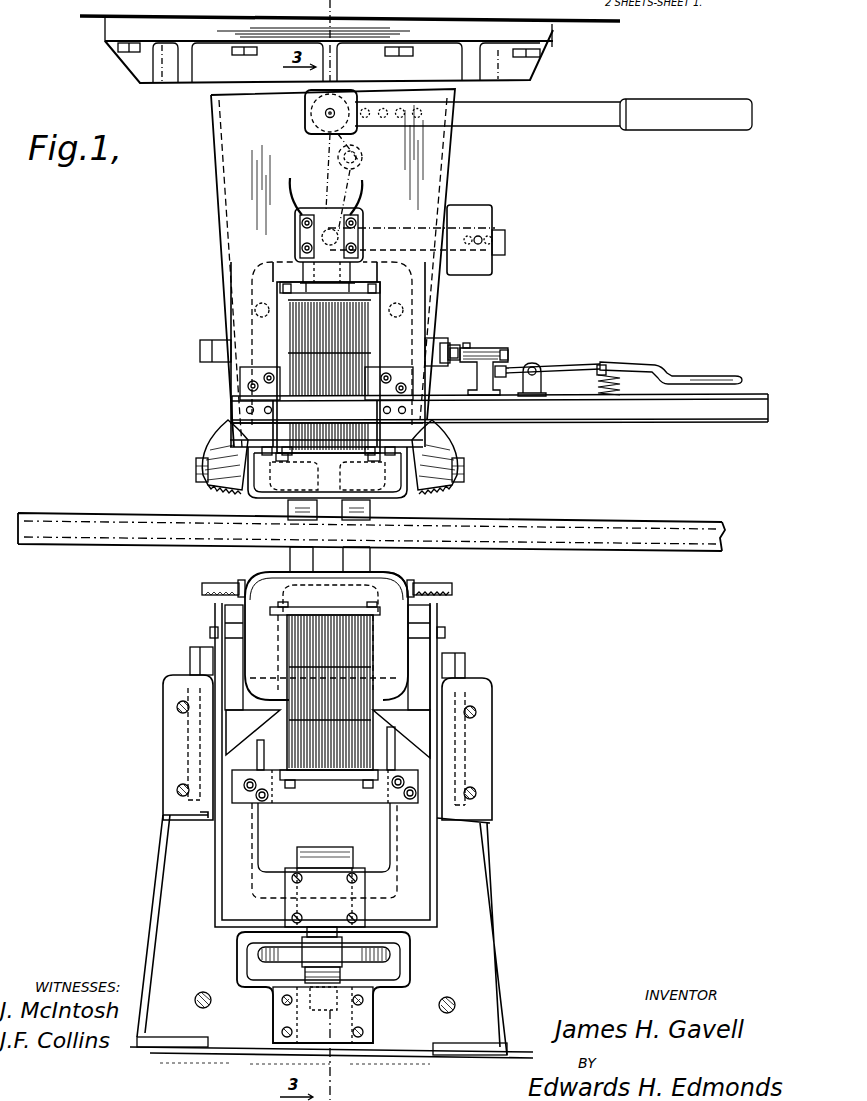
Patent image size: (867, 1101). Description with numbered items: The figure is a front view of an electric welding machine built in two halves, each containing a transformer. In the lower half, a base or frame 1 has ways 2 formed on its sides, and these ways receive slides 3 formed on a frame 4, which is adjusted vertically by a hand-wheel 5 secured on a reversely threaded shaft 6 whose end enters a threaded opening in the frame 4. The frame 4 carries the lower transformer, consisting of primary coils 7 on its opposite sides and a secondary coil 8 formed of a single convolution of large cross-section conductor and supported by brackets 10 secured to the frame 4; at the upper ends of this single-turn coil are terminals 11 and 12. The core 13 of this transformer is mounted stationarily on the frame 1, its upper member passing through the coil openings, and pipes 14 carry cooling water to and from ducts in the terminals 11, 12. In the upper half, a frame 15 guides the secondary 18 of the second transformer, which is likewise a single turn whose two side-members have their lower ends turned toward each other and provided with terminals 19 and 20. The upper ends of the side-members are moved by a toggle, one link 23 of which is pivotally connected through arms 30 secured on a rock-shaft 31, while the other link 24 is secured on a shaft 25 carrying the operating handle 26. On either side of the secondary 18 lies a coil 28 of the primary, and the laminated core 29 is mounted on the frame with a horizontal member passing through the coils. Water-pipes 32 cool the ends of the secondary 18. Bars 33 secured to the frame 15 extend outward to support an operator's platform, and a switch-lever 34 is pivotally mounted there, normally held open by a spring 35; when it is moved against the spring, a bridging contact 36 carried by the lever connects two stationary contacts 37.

The base or frame 1 is at (170, 829).
The ways 2 is at (500, 740).
The slides 3 is at (470, 652).
The frame 4 is at (432, 655).
The hand-wheel 5 is at (262, 950).
The reversely threaded shaft 6 is at (310, 978).
The primary coils 7 is at (326, 636).
The secondary coil 8 is at (400, 582).
The brackets 10 is at (328, 740).
The terminal 11 is at (290, 556).
The terminal 12 is at (370, 556).
The core 13 is at (335, 760).
The pipes 14 is at (440, 585).
The frame 15 is at (333, 268).
The secondary 18 is at (455, 490).
The terminal 19 is at (288, 505).
The terminal 20 is at (370, 505).
The link 23 is at (328, 183).
The link 24 is at (337, 156).
The shaft 25 is at (306, 111).
The operating handle 26 is at (604, 118).
The primary coil 28 is at (398, 462).
The core 29 is at (328, 367).
The arms 30 is at (373, 326).
The rock-shaft 31 is at (505, 255).
The water-pipes 32 is at (215, 486).
The bars 33 is at (558, 412).
The switch-lever 34 is at (644, 364).
The spring 35 is at (597, 368).
The bridging contact 36 is at (508, 366).
The stationary contacts 37 is at (505, 352).